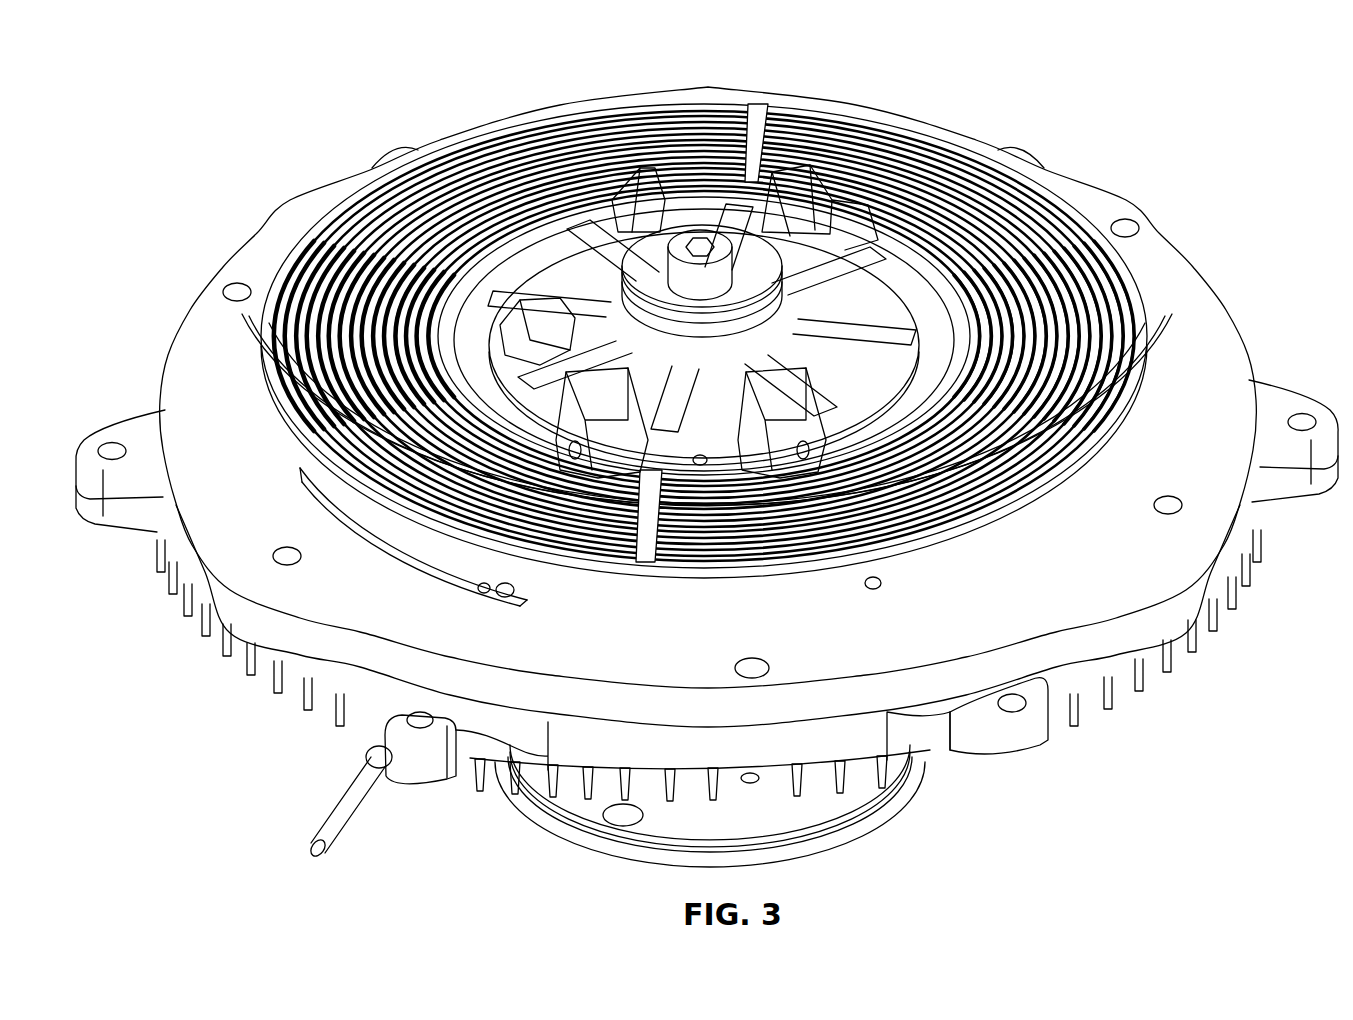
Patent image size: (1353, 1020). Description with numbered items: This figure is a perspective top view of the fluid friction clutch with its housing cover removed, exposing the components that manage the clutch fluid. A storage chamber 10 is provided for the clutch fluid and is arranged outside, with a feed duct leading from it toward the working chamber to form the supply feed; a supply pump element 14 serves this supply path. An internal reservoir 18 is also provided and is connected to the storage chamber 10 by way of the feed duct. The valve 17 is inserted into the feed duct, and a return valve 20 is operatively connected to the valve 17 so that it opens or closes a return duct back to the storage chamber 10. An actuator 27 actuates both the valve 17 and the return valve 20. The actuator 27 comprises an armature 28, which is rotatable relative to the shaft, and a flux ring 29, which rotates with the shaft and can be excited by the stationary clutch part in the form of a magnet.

The storage chamber 10 is at (1158, 397).
The supply pump element 14 is at (433, 567).
The valve 17 is at (585, 405).
The internal reservoir 18 is at (918, 360).
The return valve 20 is at (775, 420).
The actuator 27 is at (505, 347).
The armature 28 is at (560, 270).
The flux ring 29 is at (858, 245).